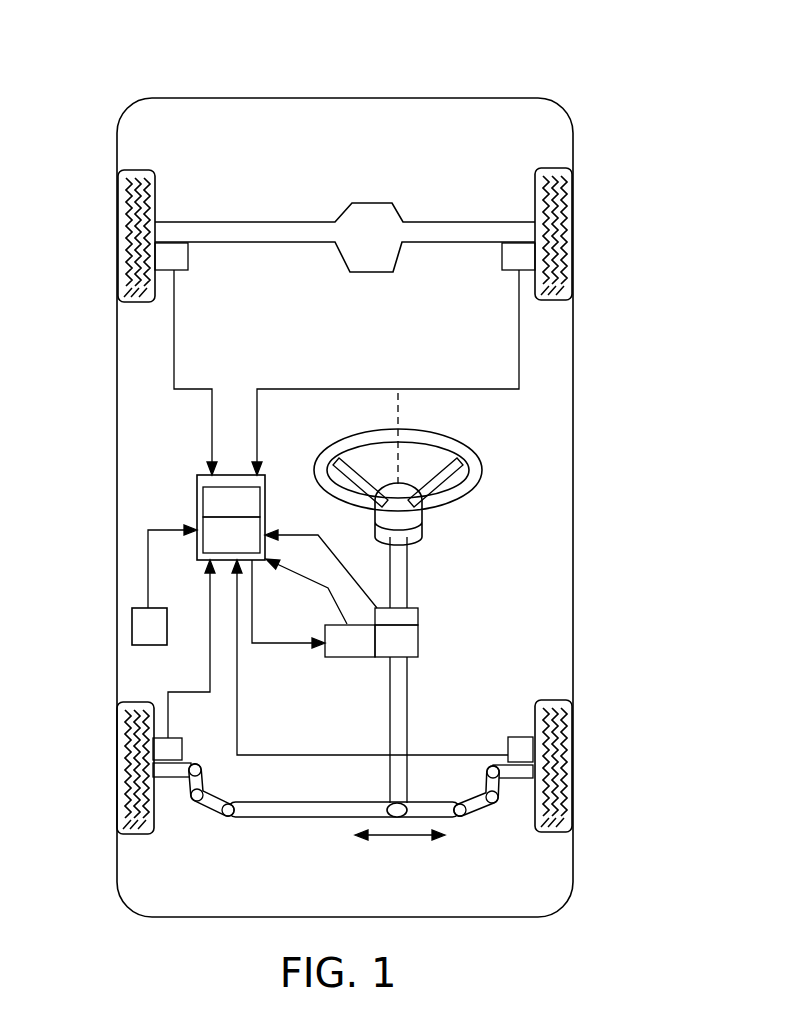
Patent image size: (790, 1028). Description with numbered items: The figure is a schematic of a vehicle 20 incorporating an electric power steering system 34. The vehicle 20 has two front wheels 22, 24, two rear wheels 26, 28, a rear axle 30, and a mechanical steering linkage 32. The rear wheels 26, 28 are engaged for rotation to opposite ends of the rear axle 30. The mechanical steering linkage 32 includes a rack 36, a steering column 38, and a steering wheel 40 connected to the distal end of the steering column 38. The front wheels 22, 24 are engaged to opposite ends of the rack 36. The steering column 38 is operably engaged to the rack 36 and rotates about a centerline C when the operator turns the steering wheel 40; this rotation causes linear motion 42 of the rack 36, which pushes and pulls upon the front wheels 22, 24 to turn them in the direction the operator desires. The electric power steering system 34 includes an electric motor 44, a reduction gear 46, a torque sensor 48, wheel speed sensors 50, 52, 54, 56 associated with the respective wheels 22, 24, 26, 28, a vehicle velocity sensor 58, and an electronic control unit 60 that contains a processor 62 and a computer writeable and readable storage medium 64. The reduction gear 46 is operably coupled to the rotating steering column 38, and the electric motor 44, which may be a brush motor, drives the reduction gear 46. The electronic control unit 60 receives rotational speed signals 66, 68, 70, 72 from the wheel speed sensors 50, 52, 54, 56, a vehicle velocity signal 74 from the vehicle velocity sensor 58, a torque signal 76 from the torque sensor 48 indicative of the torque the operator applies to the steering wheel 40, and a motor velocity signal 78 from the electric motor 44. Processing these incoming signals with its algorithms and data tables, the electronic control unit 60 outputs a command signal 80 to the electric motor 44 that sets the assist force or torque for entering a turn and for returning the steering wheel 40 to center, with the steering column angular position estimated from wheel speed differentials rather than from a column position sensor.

The vehicle 20 is at (624, 78).
The front wheel 22 is at (120, 770).
The front wheel 24 is at (573, 767).
The rear wheel 26 is at (118, 230).
The rear wheel 28 is at (575, 228).
The rear axle 30 is at (280, 222).
The mechanical steering linkage 32 is at (434, 731).
The electric power steering system 34 is at (155, 465).
The rack 36 is at (287, 822).
The steering column 38 is at (410, 580).
The steering wheel 40 is at (472, 452).
The linear motion 42 is at (403, 838).
The electric motor 44 is at (348, 645).
The reduction gear 46 is at (412, 647).
The torque sensor 48 is at (412, 618).
The wheel speed sensor 50 is at (183, 740).
The wheel speed sensor 52 is at (520, 737).
The wheel speed sensor 54 is at (188, 254).
The wheel speed sensor 56 is at (502, 252).
The vehicle velocity sensor 58 is at (132, 623).
The electronic control unit 60 is at (172, 512).
The processor 62 is at (222, 512).
The computer writeable and readable storage medium 64 is at (222, 547).
The rotational speed signal 66 is at (208, 680).
The rotational speed signal 68 is at (276, 762).
The rotational speed signal 70 is at (174, 343).
The rotational speed signal 72 is at (352, 388).
The vehicle velocity signal 74 is at (146, 570).
The torque signal 76 is at (357, 580).
The motor velocity signal 78 is at (293, 567).
The command signal 80 is at (263, 620).
The centerline C is at (400, 420).